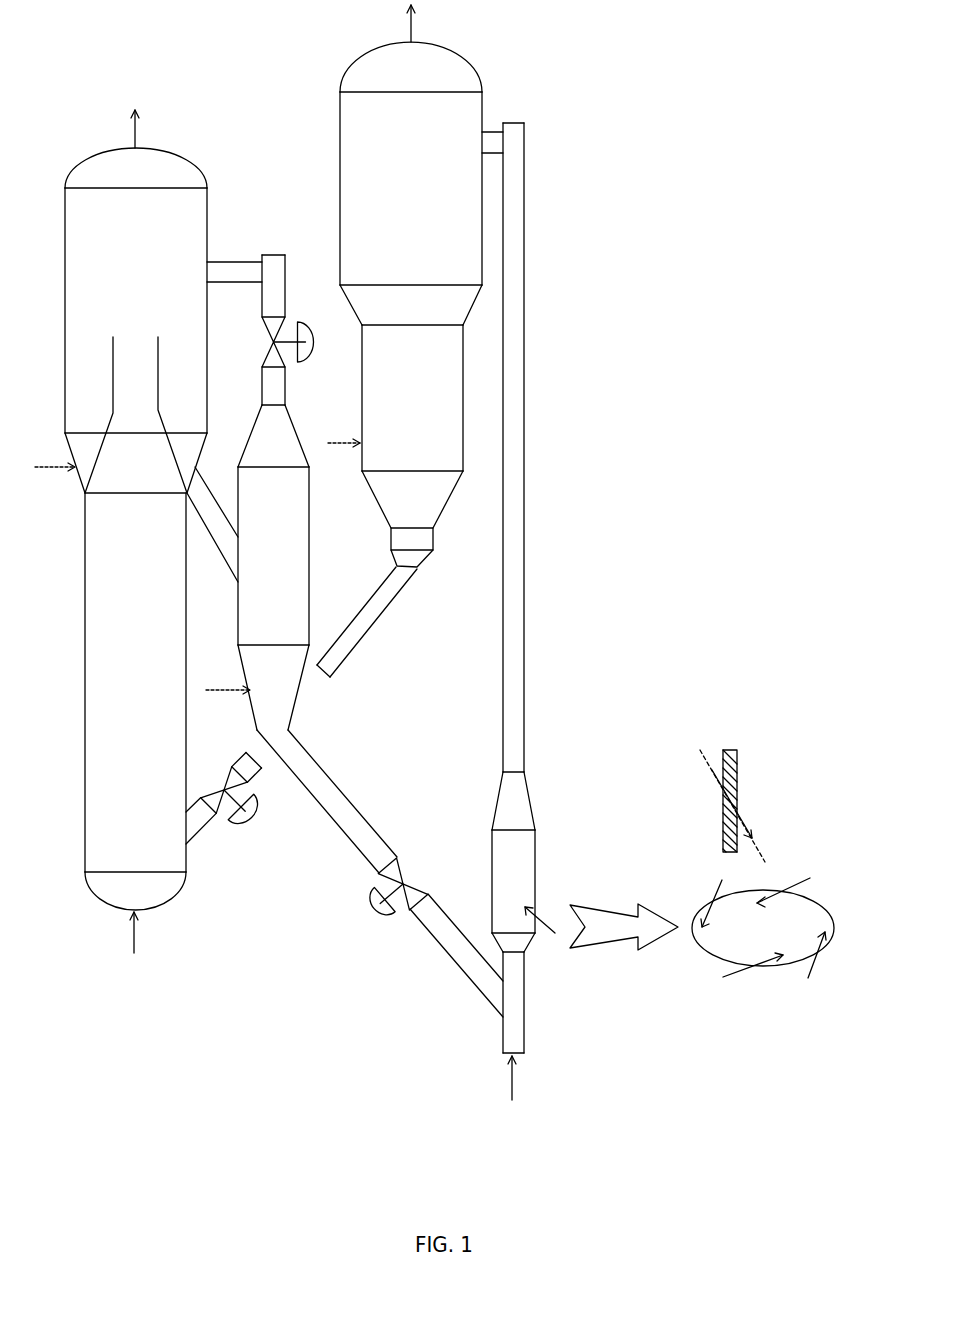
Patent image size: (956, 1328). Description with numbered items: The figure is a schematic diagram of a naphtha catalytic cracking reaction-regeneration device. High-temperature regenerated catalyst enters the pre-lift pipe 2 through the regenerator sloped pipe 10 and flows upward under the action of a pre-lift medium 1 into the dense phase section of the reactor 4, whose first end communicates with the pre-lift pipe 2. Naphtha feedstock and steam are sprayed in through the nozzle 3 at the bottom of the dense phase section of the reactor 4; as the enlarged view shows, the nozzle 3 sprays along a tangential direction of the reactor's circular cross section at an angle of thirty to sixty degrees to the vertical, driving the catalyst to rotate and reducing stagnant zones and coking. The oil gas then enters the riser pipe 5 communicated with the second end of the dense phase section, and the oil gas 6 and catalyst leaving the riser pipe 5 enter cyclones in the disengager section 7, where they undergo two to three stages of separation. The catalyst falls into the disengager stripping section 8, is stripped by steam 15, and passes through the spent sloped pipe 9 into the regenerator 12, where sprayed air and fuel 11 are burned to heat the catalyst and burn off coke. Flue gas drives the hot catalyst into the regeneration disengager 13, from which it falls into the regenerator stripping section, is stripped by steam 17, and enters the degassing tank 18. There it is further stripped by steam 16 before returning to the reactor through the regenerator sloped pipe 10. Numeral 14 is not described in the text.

The pre-lift medium 1 is at (518, 1078).
The pre-lift pipe 2 is at (513, 1017).
The nozzle 3 is at (679, 876).
The dense phase section of the reactor 4 is at (527, 860).
The riser pipe 5 is at (515, 402).
The oil gas 6 is at (418, 23).
The disengager section 7 is at (455, 120).
The disengager stripping section 8 is at (445, 420).
The spent sloped pipe 9 is at (372, 615).
The regenerator sloped pipe 10 is at (377, 852).
The air and fuel 11 is at (147, 932).
The regenerator 12 is at (105, 658).
The regeneration disengager 13 is at (170, 253).
The flue gas outlet 14 is at (117, 129).
The steam 15 is at (342, 431).
The steam 16 is at (228, 679).
The steam 17 is at (55, 456).
The degassing tank 18 is at (292, 595).